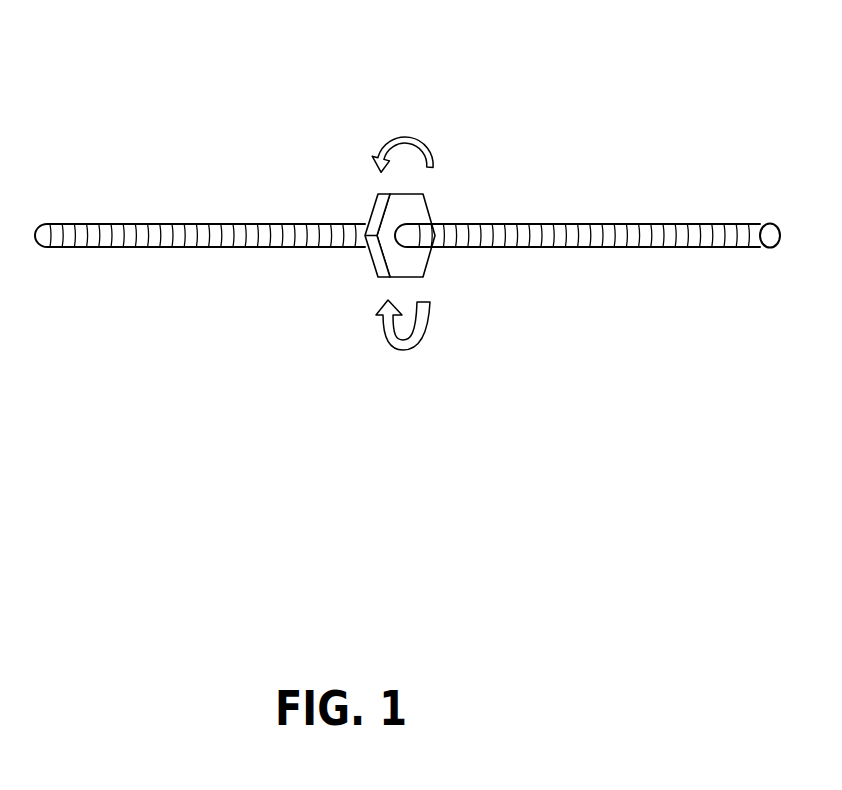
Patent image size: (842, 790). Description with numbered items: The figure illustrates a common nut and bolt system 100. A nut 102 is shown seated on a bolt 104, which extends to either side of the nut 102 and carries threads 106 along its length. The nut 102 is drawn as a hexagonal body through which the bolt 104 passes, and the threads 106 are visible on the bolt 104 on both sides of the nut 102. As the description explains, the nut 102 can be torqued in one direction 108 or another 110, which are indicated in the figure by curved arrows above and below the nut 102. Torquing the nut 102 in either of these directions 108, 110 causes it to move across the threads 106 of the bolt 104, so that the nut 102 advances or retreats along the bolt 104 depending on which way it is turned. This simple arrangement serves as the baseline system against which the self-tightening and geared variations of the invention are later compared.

The nut and bolt system 100 is at (470, 59).
The nut 102 is at (439, 191).
The bolt 104 is at (782, 220).
The threads 106 is at (585, 218).
The one direction 108 is at (401, 135).
The another direction 110 is at (383, 334).